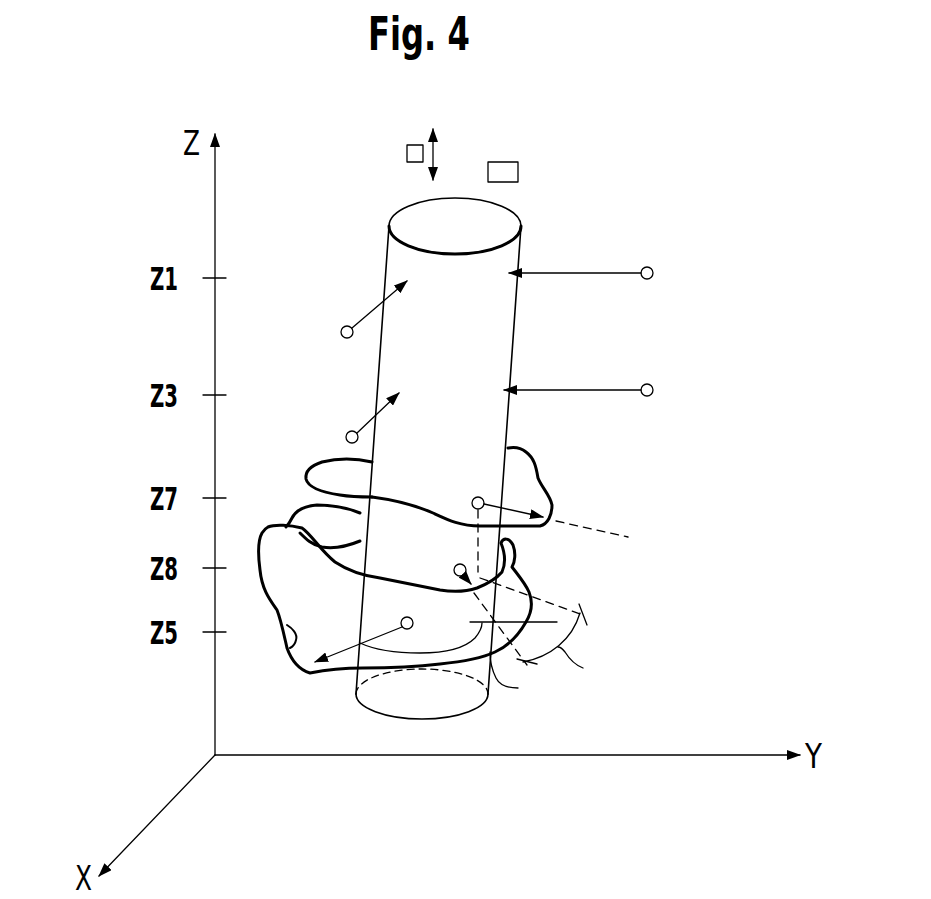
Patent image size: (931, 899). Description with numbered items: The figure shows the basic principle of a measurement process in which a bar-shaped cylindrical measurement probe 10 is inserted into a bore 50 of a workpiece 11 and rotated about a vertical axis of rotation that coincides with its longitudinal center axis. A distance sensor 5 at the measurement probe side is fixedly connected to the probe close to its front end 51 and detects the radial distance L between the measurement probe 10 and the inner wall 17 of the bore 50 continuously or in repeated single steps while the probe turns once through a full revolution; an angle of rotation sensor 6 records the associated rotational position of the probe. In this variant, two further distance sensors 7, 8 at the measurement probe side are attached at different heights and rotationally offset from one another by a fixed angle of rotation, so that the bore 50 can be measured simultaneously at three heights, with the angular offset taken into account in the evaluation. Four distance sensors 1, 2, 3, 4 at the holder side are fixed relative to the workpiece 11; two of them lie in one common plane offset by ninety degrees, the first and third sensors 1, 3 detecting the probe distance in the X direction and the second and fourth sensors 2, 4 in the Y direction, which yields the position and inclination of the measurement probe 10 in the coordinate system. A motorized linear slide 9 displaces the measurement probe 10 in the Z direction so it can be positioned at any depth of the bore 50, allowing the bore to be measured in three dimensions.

The first distance sensor at the holder side 1 is at (342, 336).
The second distance sensor at the holder side 2 is at (653, 273).
The third distance sensor at the holder side 3 is at (346, 437).
The fourth distance sensor at the holder side 4 is at (653, 390).
The distance sensor at the measurement probe side 5 is at (413, 621).
The angle of rotation sensor 6 is at (510, 172).
The further distance sensor at the measurement probe side 7 is at (472, 502).
The further distance sensor at the measurement probe side 8 is at (454, 570).
The motorized linear slide 9 is at (407, 152).
The measurement probe 10 is at (398, 250).
The workpiece 11 is at (301, 473).
The inner wall 17 is at (290, 660).
The bore 50 is at (548, 490).
The front end 51 is at (331, 682).